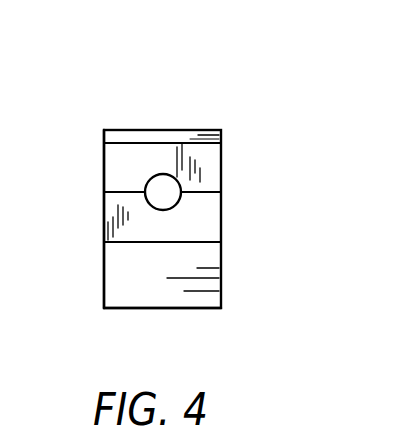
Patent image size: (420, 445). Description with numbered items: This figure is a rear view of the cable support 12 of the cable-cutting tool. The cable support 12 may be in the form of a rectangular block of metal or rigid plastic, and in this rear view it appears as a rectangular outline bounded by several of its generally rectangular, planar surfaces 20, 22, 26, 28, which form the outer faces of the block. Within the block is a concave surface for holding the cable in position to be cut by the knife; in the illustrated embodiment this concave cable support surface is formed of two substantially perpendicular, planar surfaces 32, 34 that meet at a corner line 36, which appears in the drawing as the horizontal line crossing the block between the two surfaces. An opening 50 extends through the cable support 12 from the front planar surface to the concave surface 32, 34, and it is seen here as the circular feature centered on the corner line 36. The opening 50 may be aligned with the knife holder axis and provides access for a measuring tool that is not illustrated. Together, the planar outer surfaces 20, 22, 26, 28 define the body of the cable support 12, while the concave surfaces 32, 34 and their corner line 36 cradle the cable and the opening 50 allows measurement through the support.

The cable support 12 is at (262, 42).
The planar surface 20 is at (141, 130).
The planar surface 22 is at (103, 281).
The planar surface 26 is at (222, 283).
The planar surface 28 is at (165, 308).
The planar surface of concave cable support surface 32 is at (212, 156).
The planar surface of concave cable support surface 34 is at (197, 232).
The corner line 36 is at (126, 192).
The opening 50 is at (182, 199).